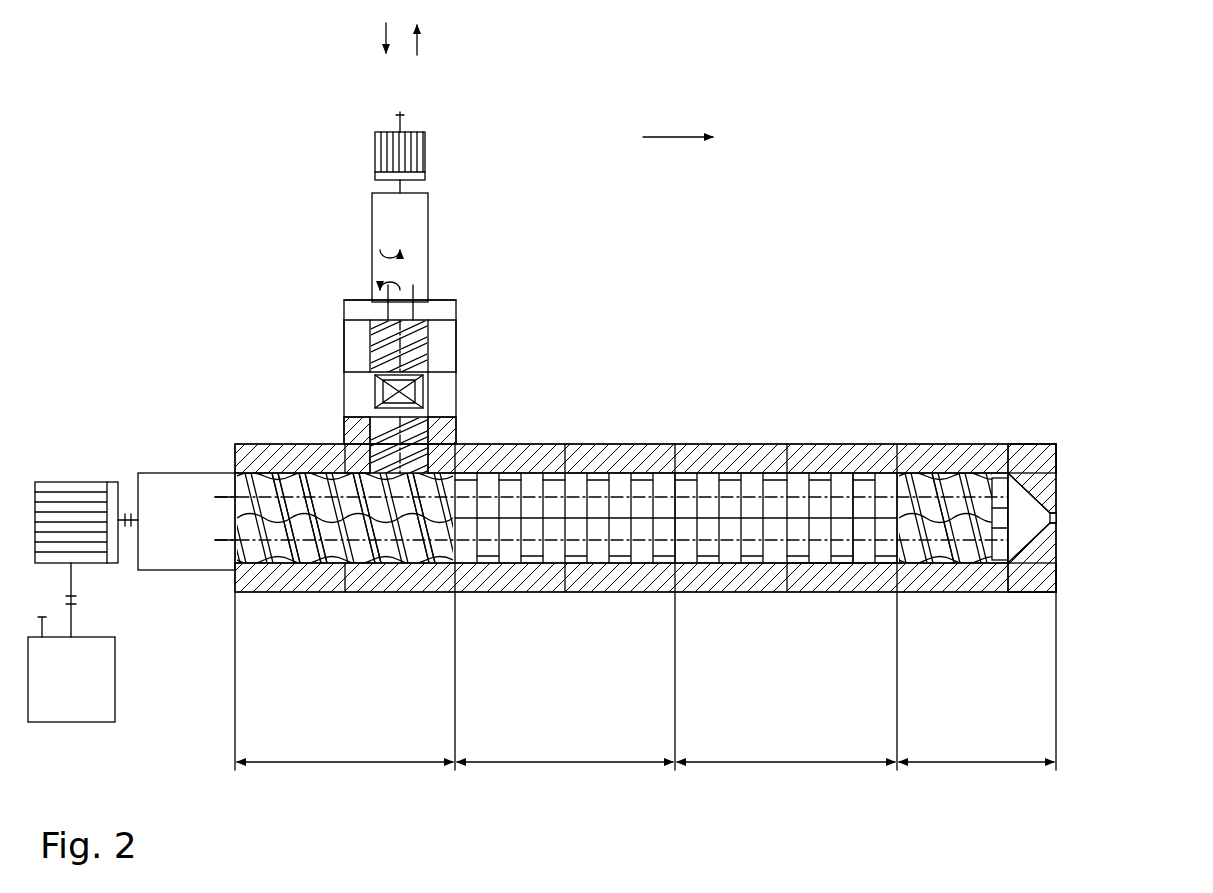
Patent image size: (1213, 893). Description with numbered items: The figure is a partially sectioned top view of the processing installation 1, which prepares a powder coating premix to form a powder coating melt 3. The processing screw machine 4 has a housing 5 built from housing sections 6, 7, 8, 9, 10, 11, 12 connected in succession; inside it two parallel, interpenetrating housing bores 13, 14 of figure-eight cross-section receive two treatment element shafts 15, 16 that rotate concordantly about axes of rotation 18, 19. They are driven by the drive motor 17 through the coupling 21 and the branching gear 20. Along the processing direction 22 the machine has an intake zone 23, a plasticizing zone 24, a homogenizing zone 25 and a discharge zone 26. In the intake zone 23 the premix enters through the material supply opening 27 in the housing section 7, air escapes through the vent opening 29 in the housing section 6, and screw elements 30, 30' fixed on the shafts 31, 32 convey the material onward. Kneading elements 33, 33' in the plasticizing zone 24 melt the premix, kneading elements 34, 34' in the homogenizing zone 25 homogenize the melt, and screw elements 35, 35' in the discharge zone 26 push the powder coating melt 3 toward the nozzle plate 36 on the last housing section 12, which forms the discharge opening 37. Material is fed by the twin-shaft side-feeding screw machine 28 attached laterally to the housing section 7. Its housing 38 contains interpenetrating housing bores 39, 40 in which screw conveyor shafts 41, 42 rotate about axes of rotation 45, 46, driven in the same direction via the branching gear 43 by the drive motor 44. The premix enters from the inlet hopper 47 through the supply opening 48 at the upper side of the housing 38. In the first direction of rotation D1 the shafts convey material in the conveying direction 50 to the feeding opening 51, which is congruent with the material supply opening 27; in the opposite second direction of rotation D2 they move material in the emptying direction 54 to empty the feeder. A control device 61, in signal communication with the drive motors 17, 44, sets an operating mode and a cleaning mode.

The processing installation 1 is at (764, 106).
The powder coating melt 3 is at (548, 560).
The processing screw machine 4 is at (257, 594).
The housing 5 is at (815, 594).
The housing section 6 is at (322, 592).
The housing section 7 is at (385, 592).
The housing section 8 is at (558, 444).
The housing section 9 is at (640, 444).
The housing section 10 is at (745, 444).
The housing section 11 is at (845, 444).
The housing section 12 is at (1000, 592).
The housing bore 13 is at (1040, 590).
The housing bore 14 is at (1060, 447).
The treatment element shaft 15 is at (950, 560).
The treatment element shaft 16 is at (1000, 470).
The drive motor 17 is at (71, 482).
The axis of rotation 18 is at (1020, 558).
The axis of rotation 19 is at (1056, 518).
The branching gear 20 is at (185, 473).
The coupling 21 is at (128, 512).
The processing direction 22 is at (680, 137).
The intake zone 23 is at (345, 681).
The plasticizing zone 24 is at (566, 681).
The homogenizing zone 25 is at (787, 681).
The discharge zone 26 is at (977, 681).
The material supply opening 27 is at (456, 444).
The feeding screw machine 28 is at (345, 218).
The vent opening 29 is at (235, 540).
The screw element 30 is at (510, 590).
The screw element 30' is at (592, 590).
The shaft 31 is at (420, 555).
The shaft 32 is at (302, 592).
The kneading element 33 is at (731, 590).
The kneading element 33' is at (645, 590).
The kneading element 34 is at (818, 590).
The kneading element 34' is at (865, 590).
The screw element 35 is at (946, 590).
The screw element 35' is at (961, 448).
The nozzle plate 36 is at (1040, 472).
The discharge opening 37 is at (1052, 524).
The housing 38 is at (425, 365).
The housing bore 39 is at (376, 338).
The housing bore 40 is at (432, 332).
The screw conveyor shaft 41 is at (398, 352).
The screw conveyor shaft 42 is at (422, 310).
The branching gear 43 is at (418, 205).
The drive motor 44 is at (425, 155).
The axis of rotation 45 is at (372, 300).
The axis of rotation 46 is at (413, 290).
The inlet hopper 47 is at (380, 390).
The supply opening 48 is at (440, 390).
The conveying direction 50 is at (382, 40).
The feeding opening 51 is at (362, 444).
The emptying direction 54 is at (421, 40).
The control device 61 is at (75, 722).
The first direction of rotation D1 is at (378, 288).
The second direction of rotation D2 is at (385, 250).